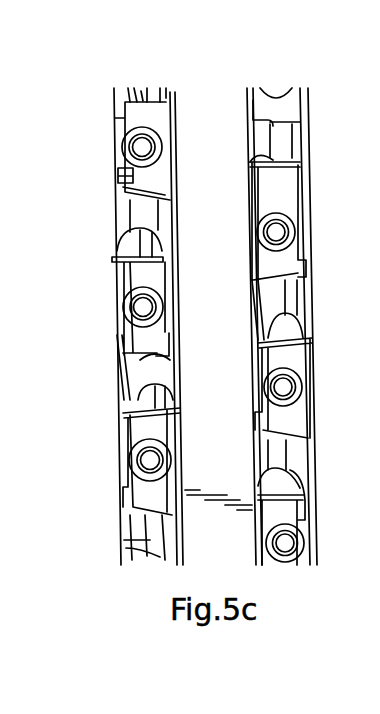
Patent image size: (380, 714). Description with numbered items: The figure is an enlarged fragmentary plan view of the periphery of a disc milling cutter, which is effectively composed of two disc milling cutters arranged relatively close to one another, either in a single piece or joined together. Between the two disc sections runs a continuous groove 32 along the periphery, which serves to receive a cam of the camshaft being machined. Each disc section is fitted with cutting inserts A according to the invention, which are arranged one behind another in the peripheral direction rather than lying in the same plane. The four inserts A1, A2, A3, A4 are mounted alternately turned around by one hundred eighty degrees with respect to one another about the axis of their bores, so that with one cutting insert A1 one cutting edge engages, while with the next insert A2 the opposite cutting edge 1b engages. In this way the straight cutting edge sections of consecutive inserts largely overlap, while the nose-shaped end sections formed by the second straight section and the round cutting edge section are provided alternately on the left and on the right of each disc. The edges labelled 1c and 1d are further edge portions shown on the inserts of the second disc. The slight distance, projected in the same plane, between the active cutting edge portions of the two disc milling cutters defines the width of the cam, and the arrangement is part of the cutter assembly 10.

The insert holder chain 10 is at (152, 96).
The cutting insert A is at (148, 118).
The cutting insert A1 is at (133, 185).
The cutting insert A2 is at (143, 283).
The cutting insert A3 is at (300, 217).
The cutting insert A4 is at (303, 363).
The cutting edge 1b is at (130, 252).
The clamping member 1c is at (300, 172).
The clamping member 1d is at (308, 327).
The groove 32 is at (222, 457).